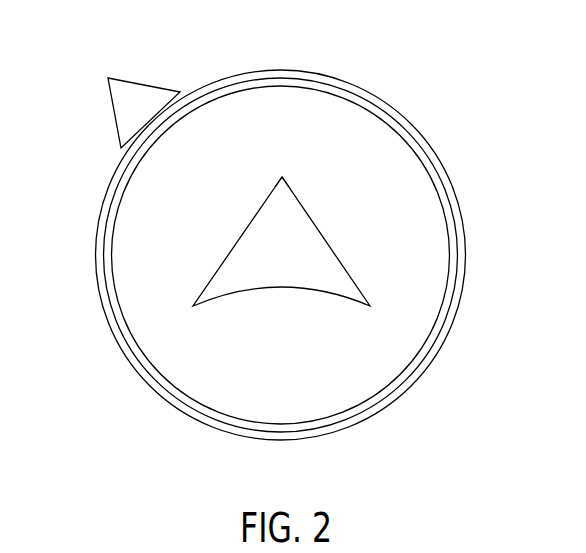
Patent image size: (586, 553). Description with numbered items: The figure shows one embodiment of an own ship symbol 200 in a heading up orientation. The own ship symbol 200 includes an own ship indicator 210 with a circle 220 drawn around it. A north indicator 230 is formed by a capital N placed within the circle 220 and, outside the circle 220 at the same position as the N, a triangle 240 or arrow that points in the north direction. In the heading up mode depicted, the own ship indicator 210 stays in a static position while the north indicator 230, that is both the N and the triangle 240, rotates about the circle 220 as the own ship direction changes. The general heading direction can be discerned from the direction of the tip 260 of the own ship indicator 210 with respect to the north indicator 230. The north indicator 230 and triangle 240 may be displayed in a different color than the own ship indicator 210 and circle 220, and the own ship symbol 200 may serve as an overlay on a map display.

The own ship symbol 200 is at (450, 97).
The own ship indicator 210 is at (295, 233).
The circle 220 is at (458, 313).
The north indicator 230 is at (157, 68).
The triangle 240 is at (110, 105).
The tip 260 is at (282, 177).